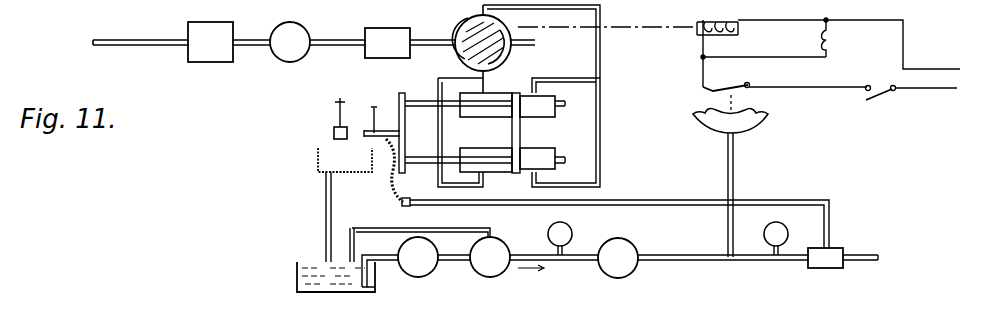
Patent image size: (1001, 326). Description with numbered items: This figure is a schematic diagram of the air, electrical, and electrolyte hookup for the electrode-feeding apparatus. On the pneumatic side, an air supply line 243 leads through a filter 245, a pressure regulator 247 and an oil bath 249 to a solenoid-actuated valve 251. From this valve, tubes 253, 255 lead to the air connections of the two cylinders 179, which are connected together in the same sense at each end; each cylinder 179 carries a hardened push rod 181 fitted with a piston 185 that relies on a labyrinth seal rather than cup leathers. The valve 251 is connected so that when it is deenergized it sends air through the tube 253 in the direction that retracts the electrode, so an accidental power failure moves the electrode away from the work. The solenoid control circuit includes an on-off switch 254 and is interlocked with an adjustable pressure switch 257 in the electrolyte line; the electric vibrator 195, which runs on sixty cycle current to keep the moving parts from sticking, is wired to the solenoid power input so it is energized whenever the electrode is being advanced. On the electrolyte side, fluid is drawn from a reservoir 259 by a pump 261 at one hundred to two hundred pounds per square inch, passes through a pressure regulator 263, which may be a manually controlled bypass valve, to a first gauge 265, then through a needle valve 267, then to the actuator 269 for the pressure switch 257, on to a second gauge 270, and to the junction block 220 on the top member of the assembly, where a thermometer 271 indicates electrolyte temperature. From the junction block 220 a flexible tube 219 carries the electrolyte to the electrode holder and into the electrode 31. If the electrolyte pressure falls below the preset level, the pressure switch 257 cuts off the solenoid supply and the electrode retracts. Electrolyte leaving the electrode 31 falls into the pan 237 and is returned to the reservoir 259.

The air supply line 243 is at (93, 41).
The filter 245 is at (207, 33).
The pressure regulator 247 is at (281, 61).
The oil bath 249 is at (369, 58).
The valve 251 is at (468, 32).
The tube 253 is at (714, 36).
The tube 255 is at (597, 64).
The electric vibrator 195 is at (832, 43).
The pressure switch 257 is at (742, 92).
The switch 254 is at (882, 97).
The actuator 269 is at (760, 128).
The push rod 181 is at (453, 168).
The piston 185 is at (515, 150).
The cylinder 179 is at (540, 160).
The pan 237 is at (318, 162).
The electrode 31 is at (366, 146).
The flexible tube 219 is at (396, 201).
The reservoir 259 is at (297, 277).
The pump 261 is at (430, 222).
The pressure regulator 263 is at (475, 268).
The first gauge 265 is at (548, 232).
The needle valve 267 is at (616, 242).
The gauge 270 is at (788, 235).
The junction block 220 is at (826, 268).
The thermometer 271 is at (862, 254).